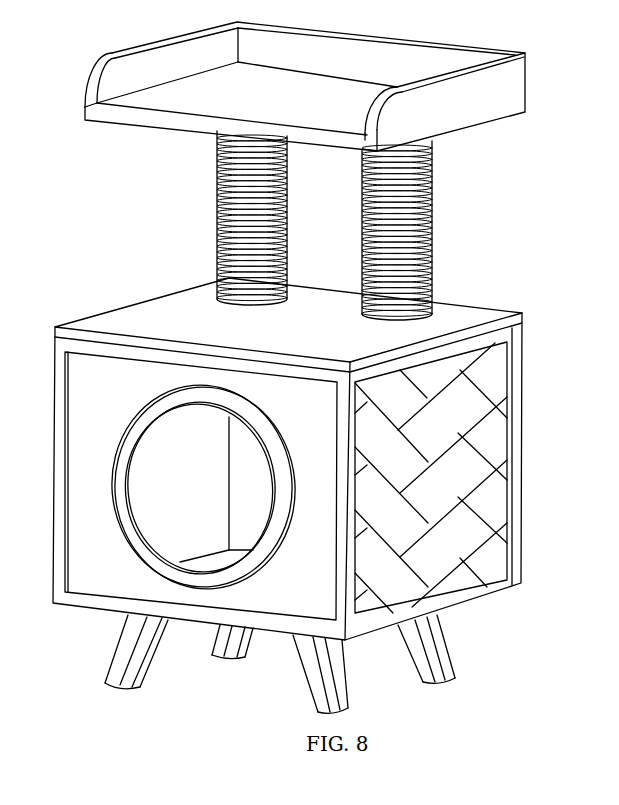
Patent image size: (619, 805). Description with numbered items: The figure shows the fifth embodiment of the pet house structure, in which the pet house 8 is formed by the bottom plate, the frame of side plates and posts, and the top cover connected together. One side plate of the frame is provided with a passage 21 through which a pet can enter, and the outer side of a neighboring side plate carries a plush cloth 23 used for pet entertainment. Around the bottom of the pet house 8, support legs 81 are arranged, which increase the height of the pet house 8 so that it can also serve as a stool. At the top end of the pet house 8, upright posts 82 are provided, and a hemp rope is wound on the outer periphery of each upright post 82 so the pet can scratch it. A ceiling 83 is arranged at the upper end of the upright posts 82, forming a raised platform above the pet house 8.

The pet house 8 is at (462, 320).
The passage 21 is at (145, 485).
The plush cloth 23 is at (468, 472).
The support leg 81 is at (148, 643).
The upright post 82 is at (408, 248).
The ceiling 83 is at (215, 93).